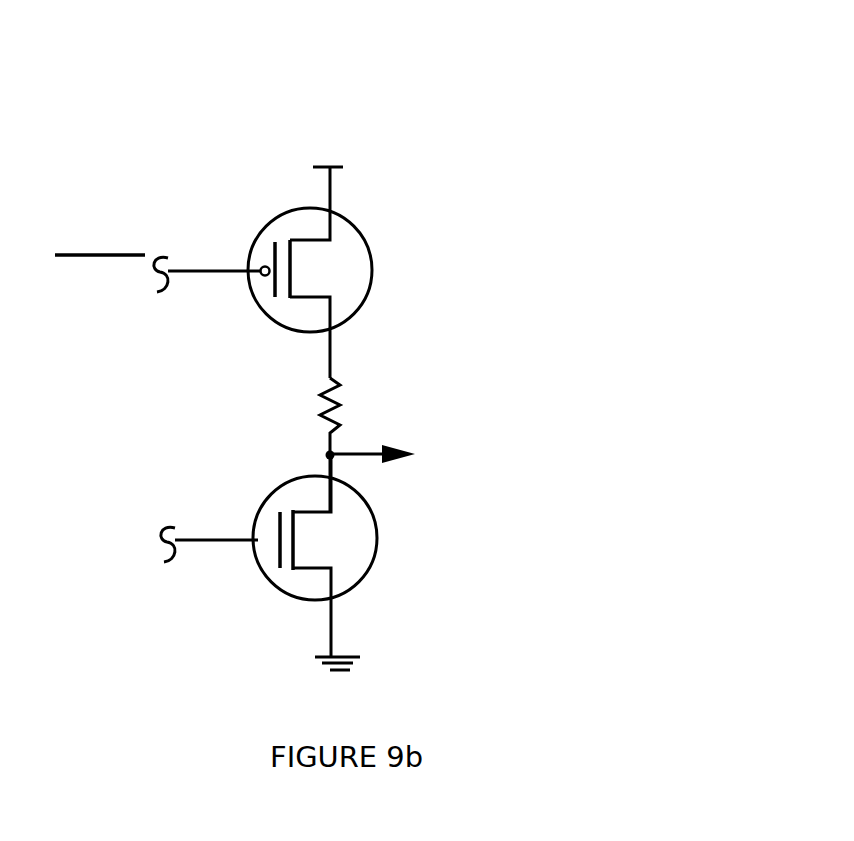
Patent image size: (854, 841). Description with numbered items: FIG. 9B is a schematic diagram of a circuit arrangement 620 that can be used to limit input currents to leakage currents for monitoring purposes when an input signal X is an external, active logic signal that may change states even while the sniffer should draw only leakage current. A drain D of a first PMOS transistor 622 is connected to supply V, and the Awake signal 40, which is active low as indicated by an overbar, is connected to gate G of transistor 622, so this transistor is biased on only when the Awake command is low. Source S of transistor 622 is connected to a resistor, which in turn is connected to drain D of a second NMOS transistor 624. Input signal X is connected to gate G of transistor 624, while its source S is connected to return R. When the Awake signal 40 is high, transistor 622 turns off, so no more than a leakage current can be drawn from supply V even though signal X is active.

The Awake signal 40 is at (198, 271).
The circuit arrangement 620 is at (503, 127).
The first PMOS transistor 622 is at (373, 250).
The second NMOS transistor 624 is at (377, 552).